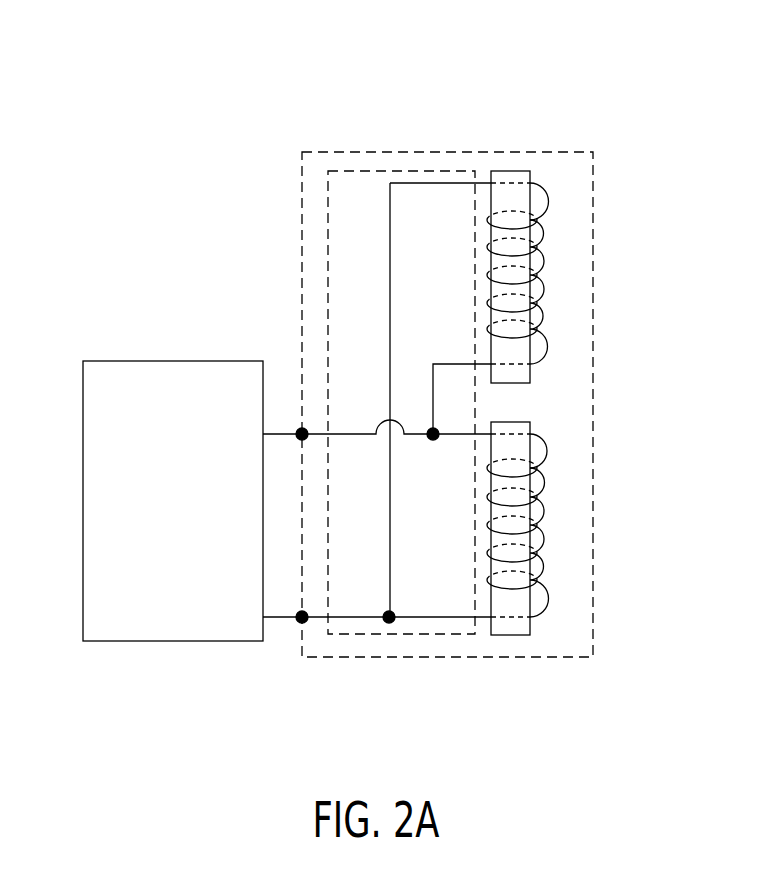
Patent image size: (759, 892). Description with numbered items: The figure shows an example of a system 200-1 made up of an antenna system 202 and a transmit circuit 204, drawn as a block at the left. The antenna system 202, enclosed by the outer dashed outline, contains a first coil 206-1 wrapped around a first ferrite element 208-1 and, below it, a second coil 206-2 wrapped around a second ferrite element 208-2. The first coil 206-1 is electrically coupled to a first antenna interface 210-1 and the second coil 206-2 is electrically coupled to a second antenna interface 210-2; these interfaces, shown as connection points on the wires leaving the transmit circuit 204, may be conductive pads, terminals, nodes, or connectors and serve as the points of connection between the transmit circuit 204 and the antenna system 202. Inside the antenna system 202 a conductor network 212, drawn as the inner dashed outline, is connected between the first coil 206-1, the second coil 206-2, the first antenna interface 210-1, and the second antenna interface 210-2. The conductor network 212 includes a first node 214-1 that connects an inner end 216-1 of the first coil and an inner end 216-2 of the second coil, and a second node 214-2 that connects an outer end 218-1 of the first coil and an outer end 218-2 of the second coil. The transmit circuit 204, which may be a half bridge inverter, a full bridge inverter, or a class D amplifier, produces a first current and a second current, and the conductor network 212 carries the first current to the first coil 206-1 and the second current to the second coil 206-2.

The system 200-1 is at (183, 67).
The antenna system 202 is at (302, 168).
The transmit circuit 204 is at (187, 526).
The first coil 206-1 is at (547, 205).
The second coil 206-2 is at (547, 513).
The first ferrite element 208-1 is at (530, 171).
The second ferrite element 208-2 is at (530, 635).
The first antenna interface 210-1 is at (300, 430).
The second antenna interface 210-2 is at (300, 620).
The conductor network 212 is at (357, 171).
The first node 214-1 is at (433, 441).
The second node 214-2 is at (391, 611).
The inner end of the first coil 216-1 is at (560, 357).
The inner end of the second coil 216-2 is at (557, 431).
The outer end of the first coil 218-1 is at (561, 187).
The outer end of the second coil 218-2 is at (550, 618).